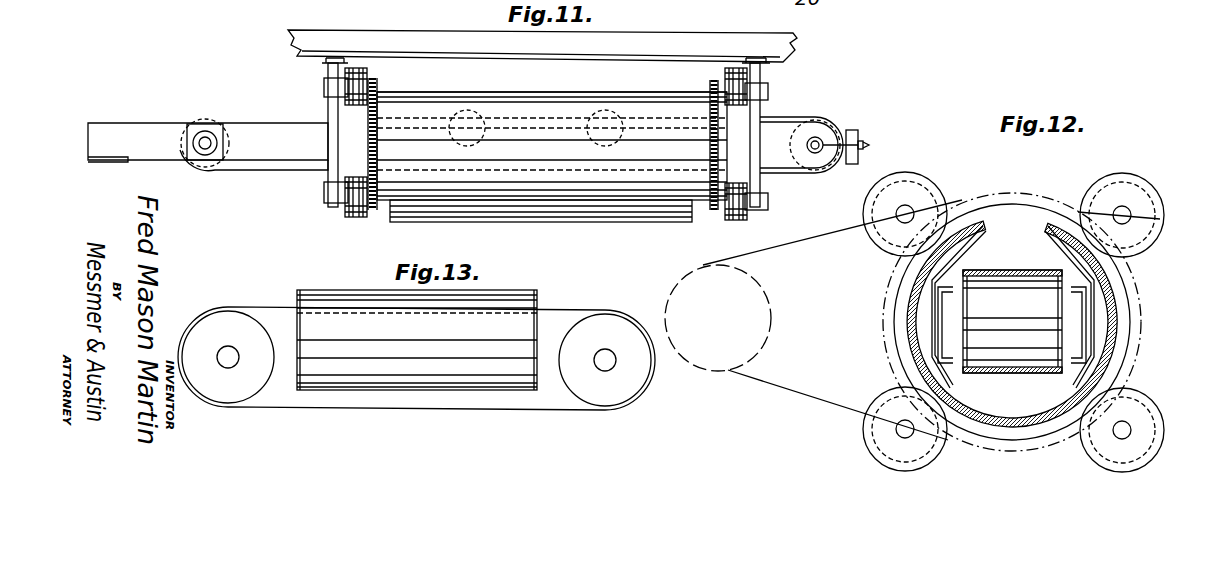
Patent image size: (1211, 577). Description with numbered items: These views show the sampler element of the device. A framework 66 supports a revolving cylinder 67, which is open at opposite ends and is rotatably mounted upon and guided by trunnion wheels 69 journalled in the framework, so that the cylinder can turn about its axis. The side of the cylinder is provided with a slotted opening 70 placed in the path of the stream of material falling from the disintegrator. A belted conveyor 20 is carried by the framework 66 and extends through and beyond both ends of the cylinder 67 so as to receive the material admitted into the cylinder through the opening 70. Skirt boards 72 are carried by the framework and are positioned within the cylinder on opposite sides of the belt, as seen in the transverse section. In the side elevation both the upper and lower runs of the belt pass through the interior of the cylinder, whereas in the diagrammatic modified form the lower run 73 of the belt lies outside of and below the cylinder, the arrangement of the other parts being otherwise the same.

In FIG. 11, the belted conveyor 20 is at (286, 171).
In FIG. 12, the belted conveyor 20 is at (1016, 374).
In FIG. 11, the framework 66 is at (793, 58).
In FIG. 11, the revolving cylinder 67 is at (477, 100).
In FIG. 12, the revolving cylinder 67 is at (907, 333).
In FIG. 13, the revolving cylinder 67 is at (523, 293).
In FIG. 11, the trunnion wheels 69 is at (725, 217).
In FIG. 12, the trunnion wheels 69 is at (927, 182).
In FIG. 11, the slotted opening 70 is at (651, 96).
In FIG. 12, the slotted opening 70 is at (1015, 221).
In FIG. 12, the skirt boards 72 is at (960, 248).
In FIG. 13, the lower run of the belt 73 is at (450, 409).